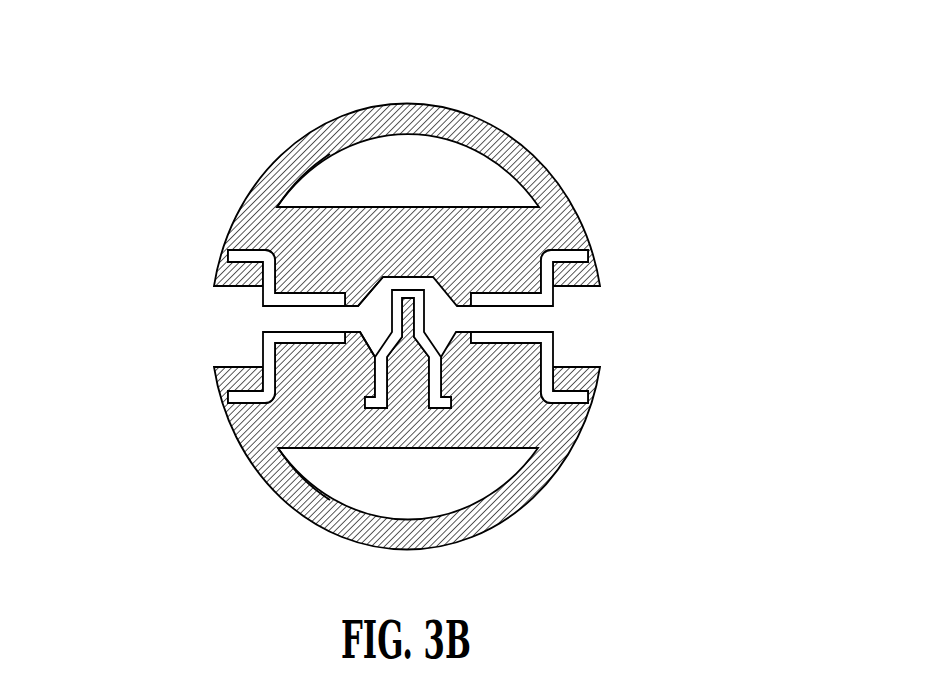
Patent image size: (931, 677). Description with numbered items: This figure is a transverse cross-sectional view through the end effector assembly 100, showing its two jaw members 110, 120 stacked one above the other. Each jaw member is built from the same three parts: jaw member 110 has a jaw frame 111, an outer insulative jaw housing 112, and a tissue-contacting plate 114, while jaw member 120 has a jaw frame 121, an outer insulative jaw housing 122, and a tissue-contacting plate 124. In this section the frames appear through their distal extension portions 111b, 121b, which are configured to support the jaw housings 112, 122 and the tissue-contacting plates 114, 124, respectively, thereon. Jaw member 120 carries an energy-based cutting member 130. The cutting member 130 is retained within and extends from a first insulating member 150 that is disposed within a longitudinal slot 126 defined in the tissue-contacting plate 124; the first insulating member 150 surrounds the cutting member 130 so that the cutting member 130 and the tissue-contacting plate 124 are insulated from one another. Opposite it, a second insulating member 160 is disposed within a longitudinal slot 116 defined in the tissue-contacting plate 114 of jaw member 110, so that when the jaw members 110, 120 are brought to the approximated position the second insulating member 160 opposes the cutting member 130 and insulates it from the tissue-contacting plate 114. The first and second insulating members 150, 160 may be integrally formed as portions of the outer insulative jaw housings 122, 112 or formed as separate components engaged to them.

The end effector assembly 100 is at (393, 327).
The jaw member 110 is at (377, 179).
The jaw frame 111 is at (408, 162).
The distal extension portion 111b is at (325, 180).
The outer insulative jaw housing 112 is at (567, 213).
The tissue-contacting plate 114 is at (547, 298).
The longitudinal slot 116 is at (441, 373).
The jaw member 120 is at (350, 450).
The jaw frame 121 is at (408, 491).
The distal extension portion 121b is at (325, 467).
The outer insulative jaw housing 122 is at (510, 507).
The tissue-contacting plate 124 is at (547, 353).
The longitudinal slot 126 is at (375, 335).
The energy-based cutting member 130 is at (450, 330).
The first insulating member 150 is at (355, 358).
The second insulating member 160 is at (360, 302).